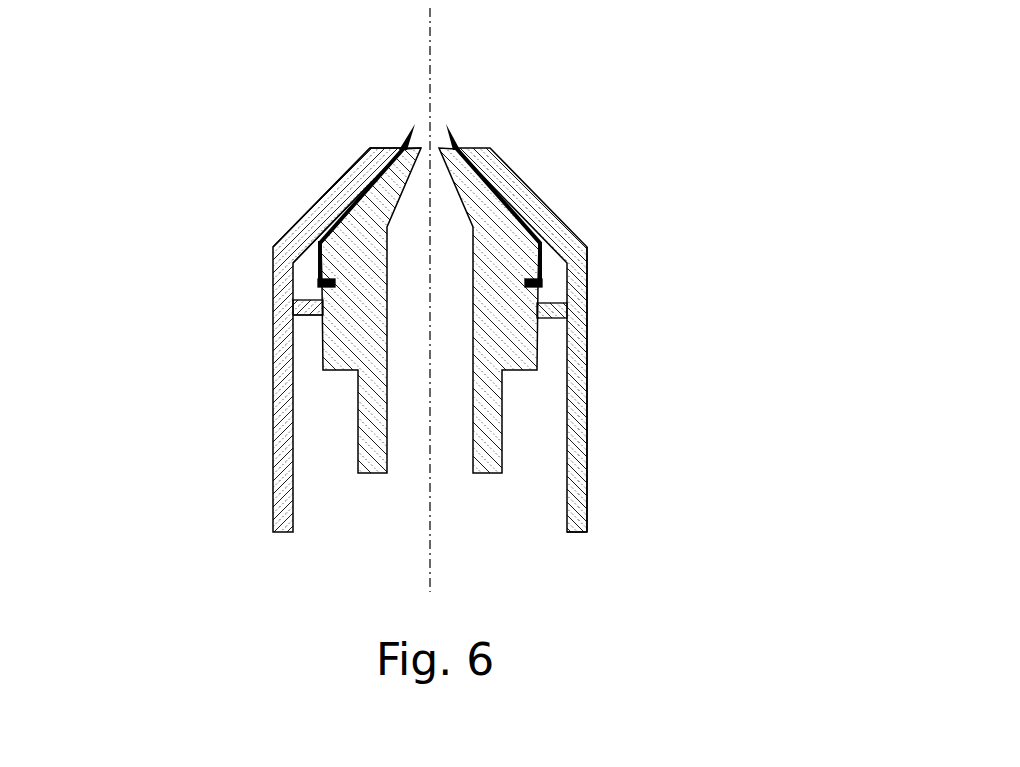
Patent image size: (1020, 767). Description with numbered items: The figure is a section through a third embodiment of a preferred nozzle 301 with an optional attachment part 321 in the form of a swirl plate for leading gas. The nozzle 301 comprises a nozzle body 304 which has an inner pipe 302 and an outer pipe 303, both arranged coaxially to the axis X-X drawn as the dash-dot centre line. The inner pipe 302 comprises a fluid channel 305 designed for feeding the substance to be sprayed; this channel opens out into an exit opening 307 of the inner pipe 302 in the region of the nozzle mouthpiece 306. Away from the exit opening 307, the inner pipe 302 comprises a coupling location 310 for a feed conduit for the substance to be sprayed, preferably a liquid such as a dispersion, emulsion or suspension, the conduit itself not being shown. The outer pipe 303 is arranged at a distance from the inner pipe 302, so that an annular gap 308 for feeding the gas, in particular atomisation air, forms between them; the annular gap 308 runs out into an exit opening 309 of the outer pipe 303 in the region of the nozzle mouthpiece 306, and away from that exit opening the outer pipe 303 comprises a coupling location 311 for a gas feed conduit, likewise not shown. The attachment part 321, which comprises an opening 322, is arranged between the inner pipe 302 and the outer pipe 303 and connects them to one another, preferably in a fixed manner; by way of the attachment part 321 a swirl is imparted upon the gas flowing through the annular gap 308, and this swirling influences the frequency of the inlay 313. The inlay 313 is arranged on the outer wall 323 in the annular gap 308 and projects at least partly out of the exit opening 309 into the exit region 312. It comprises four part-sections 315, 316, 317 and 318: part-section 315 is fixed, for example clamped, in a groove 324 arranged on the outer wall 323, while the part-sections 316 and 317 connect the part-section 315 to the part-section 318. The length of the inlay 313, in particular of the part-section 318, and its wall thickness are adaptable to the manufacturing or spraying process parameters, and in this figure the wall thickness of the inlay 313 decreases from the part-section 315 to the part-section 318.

The nozzle 301 is at (195, 110).
The inner pipe 302 is at (367, 460).
The outer pipe 303 is at (578, 287).
The nozzle body 304 is at (660, 178).
The fluid channel 305 is at (472, 456).
The nozzle mouthpiece 306 is at (152, 102).
The exit opening of the inner pipe 307 is at (497, 158).
The annular gap 308 is at (553, 265).
The exit opening of the outer pipe 309 is at (401, 142).
The coupling location 310 is at (510, 424).
The coupling location 311 is at (577, 533).
The exit region 312 is at (476, 180).
The inlay 313 is at (362, 192).
The part-section 315 is at (330, 289).
The part-section 316 is at (320, 257).
The part-section 317 is at (350, 225).
The part-section 318 is at (413, 126).
The attachment part 321 is at (560, 326).
The opening 322 is at (307, 302).
The outer wall 323 is at (349, 423).
The groove 324 is at (328, 320).